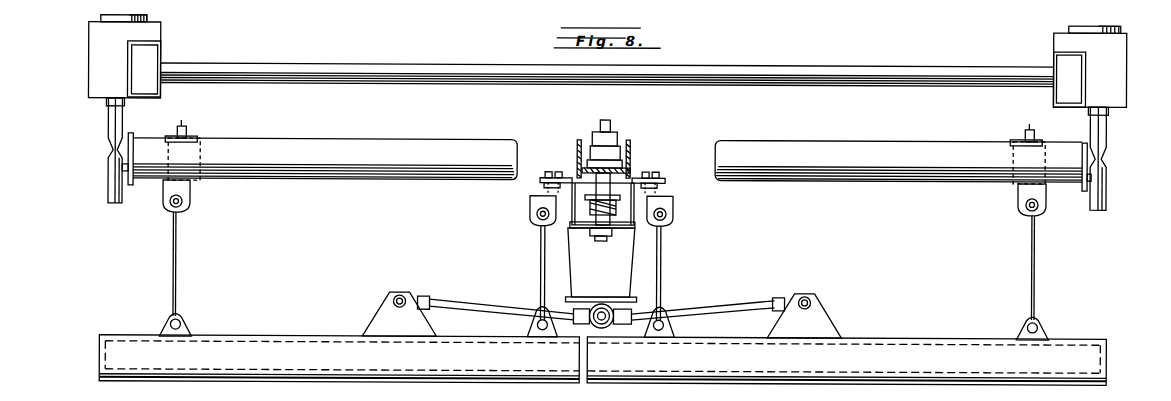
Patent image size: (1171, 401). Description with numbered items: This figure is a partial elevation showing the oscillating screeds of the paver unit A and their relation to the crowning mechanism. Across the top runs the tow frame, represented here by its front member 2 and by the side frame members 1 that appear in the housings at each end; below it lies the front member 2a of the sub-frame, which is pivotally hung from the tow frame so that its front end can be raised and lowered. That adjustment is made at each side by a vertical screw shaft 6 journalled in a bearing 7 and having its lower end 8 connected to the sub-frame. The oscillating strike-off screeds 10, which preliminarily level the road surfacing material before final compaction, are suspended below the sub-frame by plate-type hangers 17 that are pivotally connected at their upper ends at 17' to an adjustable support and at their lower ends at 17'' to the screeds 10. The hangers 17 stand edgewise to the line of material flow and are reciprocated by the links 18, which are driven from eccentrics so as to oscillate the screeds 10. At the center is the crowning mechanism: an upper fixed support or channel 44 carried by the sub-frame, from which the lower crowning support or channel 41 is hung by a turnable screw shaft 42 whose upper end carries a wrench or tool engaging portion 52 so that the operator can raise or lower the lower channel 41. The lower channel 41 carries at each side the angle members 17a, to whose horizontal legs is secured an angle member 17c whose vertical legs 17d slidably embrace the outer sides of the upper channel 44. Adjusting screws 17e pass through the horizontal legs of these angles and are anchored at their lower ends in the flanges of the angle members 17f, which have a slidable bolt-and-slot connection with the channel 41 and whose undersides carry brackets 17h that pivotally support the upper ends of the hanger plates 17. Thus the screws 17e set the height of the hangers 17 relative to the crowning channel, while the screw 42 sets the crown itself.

The side frame members 1 is at (150, 60).
The front member 2 is at (922, 73).
The front member of sub-frame 2a is at (367, 141).
The vertical screw shaft 6 is at (108, 181).
The bearing 7 is at (90, 20).
The lower end of screw shaft 8 is at (130, 180).
The oscillating strike-off screeds 10 is at (274, 345).
The plate-type hangers 17 is at (171, 228).
The hanger upper connection 17' is at (608, 223).
The hanger lower connection 17'' is at (595, 322).
The angle members 17a is at (662, 190).
The angle member 17c is at (573, 190).
The vertical legs 17d is at (578, 163).
The adjusting screws 17e is at (548, 171).
The angle members 17f is at (540, 181).
The pivot brackets 17h is at (532, 206).
The links 18 is at (499, 307).
The lower crowning support or channel 41 is at (585, 235).
The screw shaft member 42 is at (604, 190).
The upper fixed support or channel 44 is at (630, 155).
The wrench or tool engaging portion 52 is at (608, 121).
The paver unit A is at (115, 56).